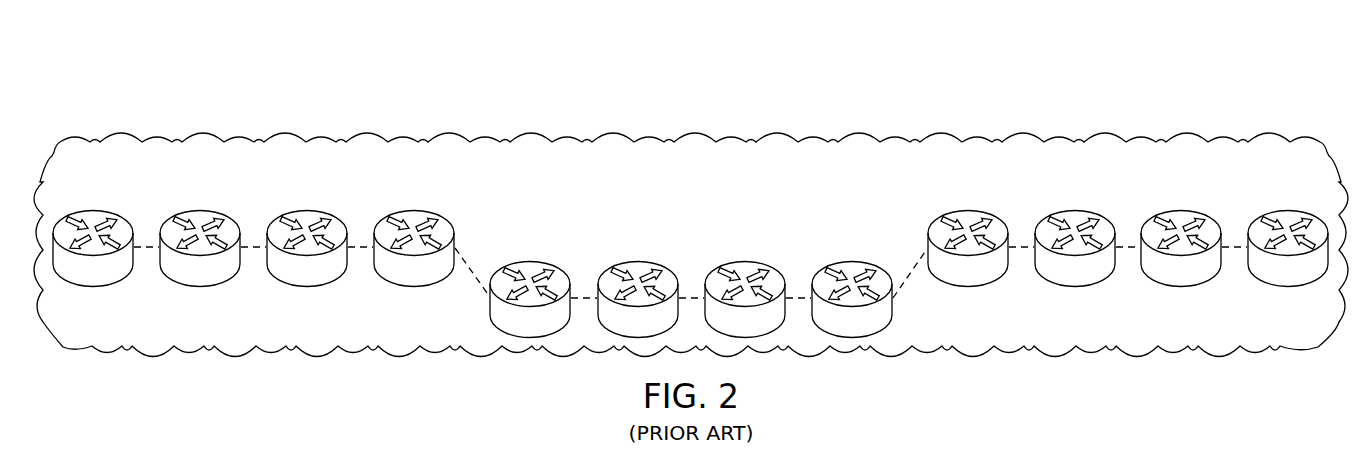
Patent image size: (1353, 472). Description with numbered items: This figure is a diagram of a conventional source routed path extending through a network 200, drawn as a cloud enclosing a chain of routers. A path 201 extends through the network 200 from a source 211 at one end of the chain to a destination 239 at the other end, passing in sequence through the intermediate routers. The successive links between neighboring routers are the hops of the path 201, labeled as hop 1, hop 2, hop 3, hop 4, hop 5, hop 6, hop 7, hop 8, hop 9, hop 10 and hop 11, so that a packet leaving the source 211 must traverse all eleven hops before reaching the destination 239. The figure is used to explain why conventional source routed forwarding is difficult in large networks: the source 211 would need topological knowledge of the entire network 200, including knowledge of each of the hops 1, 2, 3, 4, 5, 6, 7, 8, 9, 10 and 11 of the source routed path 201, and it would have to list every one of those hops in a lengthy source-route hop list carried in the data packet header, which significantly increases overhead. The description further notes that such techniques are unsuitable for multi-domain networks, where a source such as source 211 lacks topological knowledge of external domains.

The network 200 is at (973, 88).
The source 211 is at (92, 210).
The destination 239 is at (1290, 210).
The path 201 is at (467, 262).
The hop 1 is at (146, 237).
The hop 2 is at (253, 237).
The hop 3 is at (360, 237).
The hop 4 is at (485, 247).
The hop 5 is at (584, 288).
The hop 6 is at (691, 288).
The hop 7 is at (798, 288).
The hop 8 is at (910, 273).
The hop 9 is at (1021, 237).
The hop 10 is at (1128, 237).
The hop 11 is at (1235, 237).